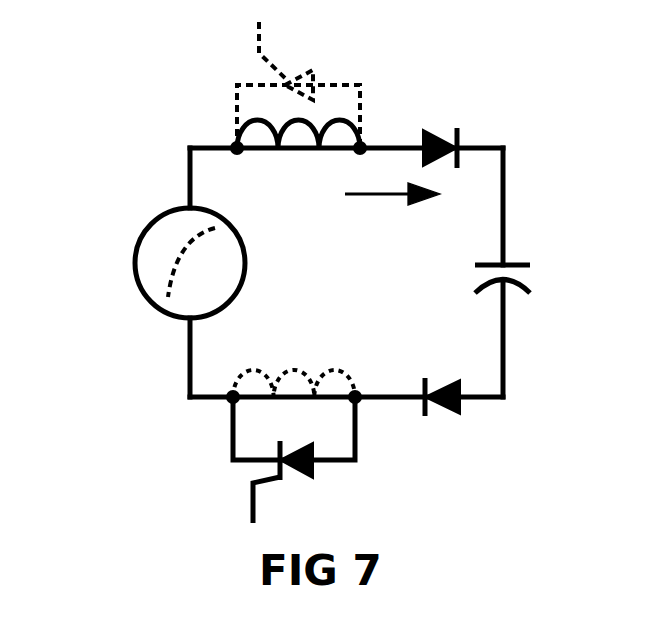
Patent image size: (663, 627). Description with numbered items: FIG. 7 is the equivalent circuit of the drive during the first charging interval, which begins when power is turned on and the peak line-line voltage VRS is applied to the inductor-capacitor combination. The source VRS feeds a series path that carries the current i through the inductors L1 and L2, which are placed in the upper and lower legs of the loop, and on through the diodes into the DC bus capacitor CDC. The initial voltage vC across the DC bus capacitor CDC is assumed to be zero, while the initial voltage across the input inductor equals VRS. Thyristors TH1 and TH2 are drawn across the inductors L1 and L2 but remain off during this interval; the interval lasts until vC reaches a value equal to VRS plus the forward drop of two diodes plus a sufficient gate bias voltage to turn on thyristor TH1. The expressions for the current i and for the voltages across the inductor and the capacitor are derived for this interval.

The thyristor TH1 is at (298, 84).
The second thyristor TH2 is at (294, 460).
The first inductor L1 is at (298, 160).
The second inductor L2 is at (294, 357).
The DC bus capacitor CDC is at (531, 309).
The peak line-line voltage VRS is at (143, 236).
The capacitor voltage vC is at (435, 285).
The current i is at (403, 201).